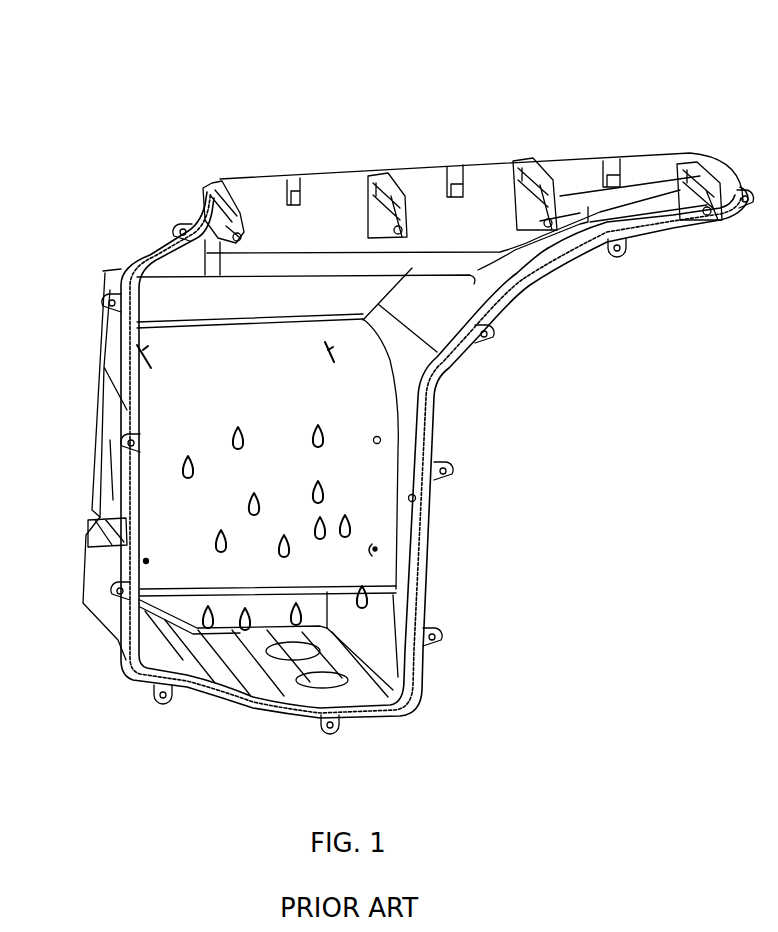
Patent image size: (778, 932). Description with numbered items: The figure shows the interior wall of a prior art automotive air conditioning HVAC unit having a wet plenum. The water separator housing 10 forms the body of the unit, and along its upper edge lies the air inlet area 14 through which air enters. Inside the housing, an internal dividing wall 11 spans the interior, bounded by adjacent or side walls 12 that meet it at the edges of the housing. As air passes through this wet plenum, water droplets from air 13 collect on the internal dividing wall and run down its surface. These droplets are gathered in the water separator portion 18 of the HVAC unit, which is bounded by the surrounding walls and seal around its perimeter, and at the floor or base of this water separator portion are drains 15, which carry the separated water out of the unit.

The water separator housing 10 is at (139, 243).
The internal dividing wall 11 is at (382, 438).
The adjacent or side walls 12 is at (416, 498).
The water droplets from air 13 is at (217, 550).
The air inlet area 14 is at (632, 177).
The drains 15 is at (380, 715).
The water separator portion 18 is at (520, 283).